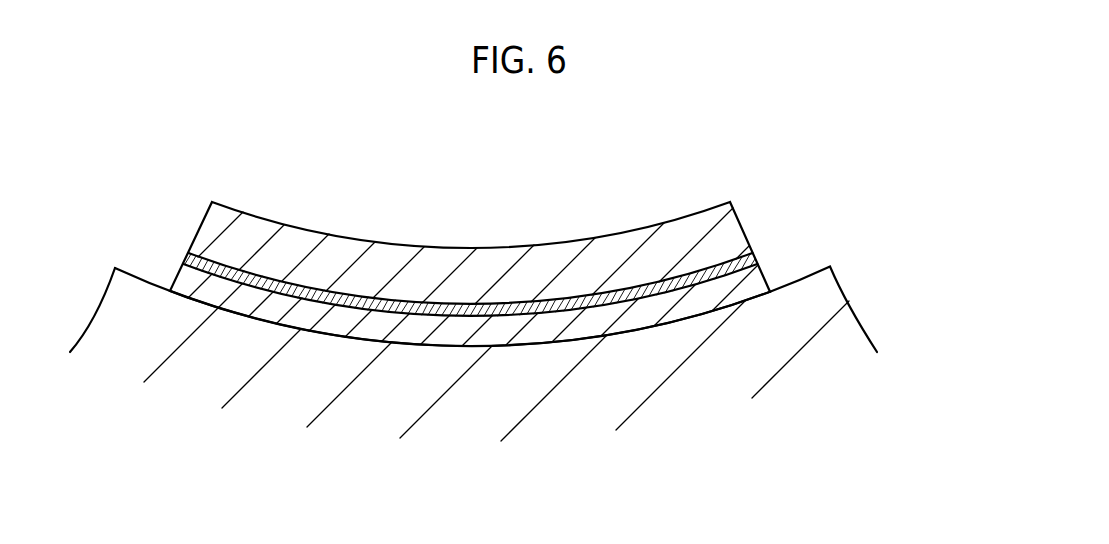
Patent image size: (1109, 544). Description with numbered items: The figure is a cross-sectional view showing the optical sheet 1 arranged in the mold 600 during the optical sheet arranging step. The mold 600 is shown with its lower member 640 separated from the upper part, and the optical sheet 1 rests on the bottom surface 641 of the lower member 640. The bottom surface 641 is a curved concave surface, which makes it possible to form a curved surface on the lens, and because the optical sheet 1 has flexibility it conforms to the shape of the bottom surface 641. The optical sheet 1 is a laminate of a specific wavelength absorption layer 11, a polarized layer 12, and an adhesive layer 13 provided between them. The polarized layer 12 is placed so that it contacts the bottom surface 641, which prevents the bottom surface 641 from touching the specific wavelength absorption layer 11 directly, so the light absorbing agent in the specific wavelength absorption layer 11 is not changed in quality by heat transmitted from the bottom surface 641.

The optical sheet 1 is at (263, 214).
The specific wavelength absorption layer 11 is at (208, 232).
The polarized layer 12 is at (188, 284).
The adhesive layer 13 is at (191, 257).
The mold 600 is at (876, 246).
The lower member 640 is at (847, 333).
The bottom surface 641 is at (809, 276).